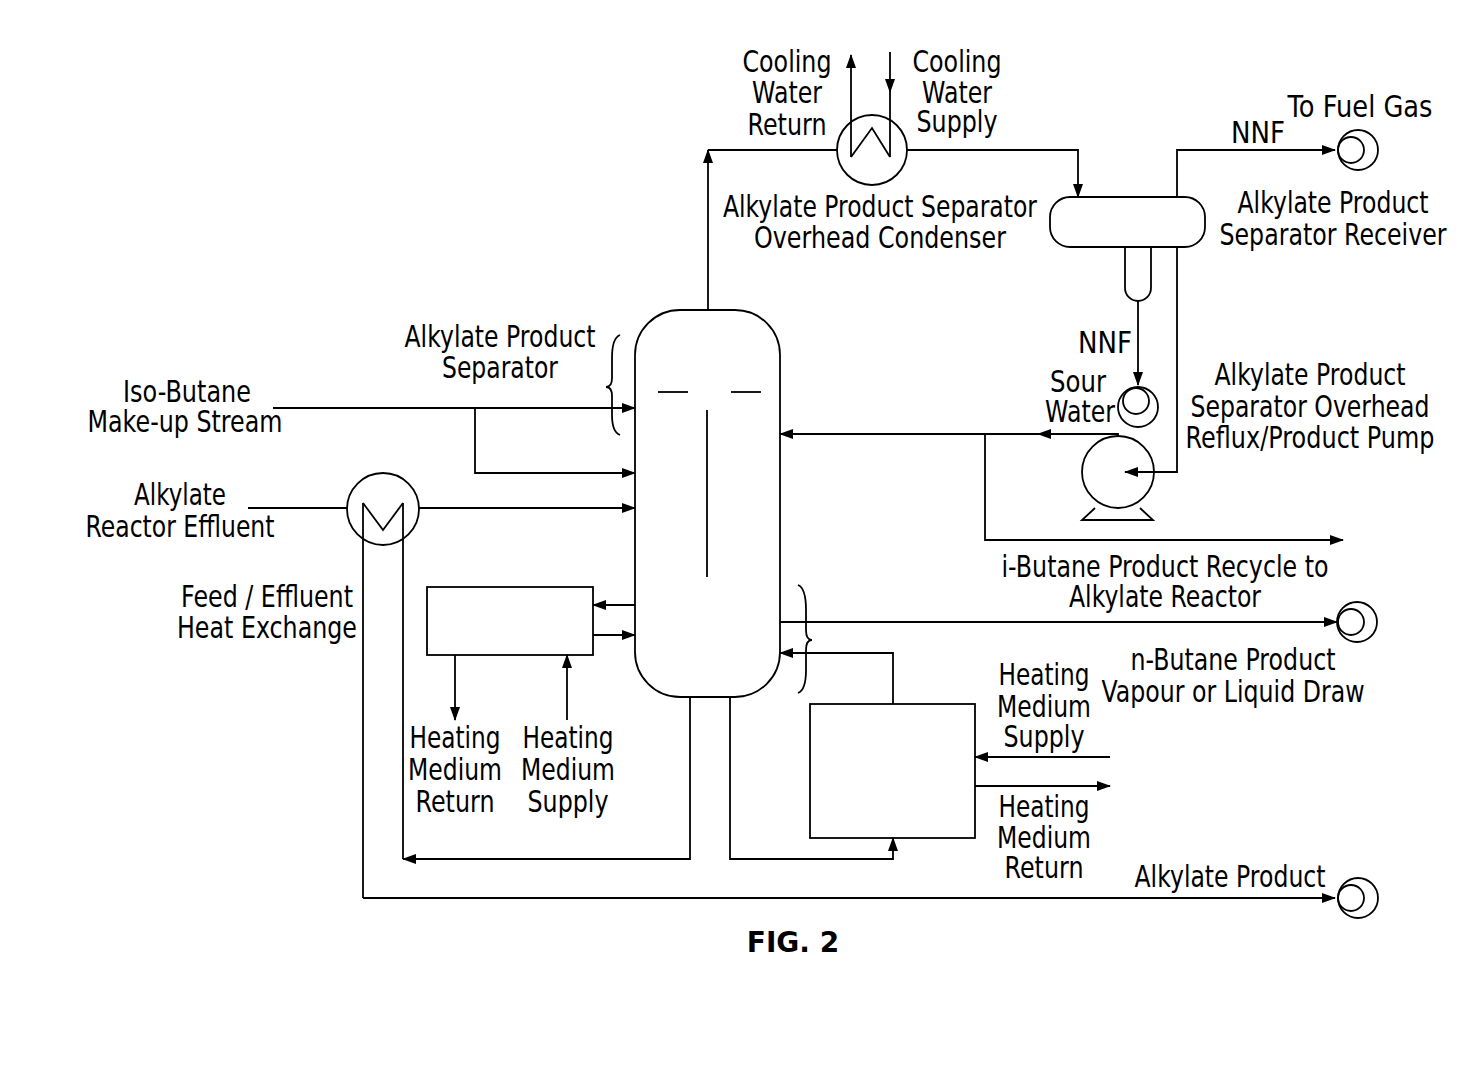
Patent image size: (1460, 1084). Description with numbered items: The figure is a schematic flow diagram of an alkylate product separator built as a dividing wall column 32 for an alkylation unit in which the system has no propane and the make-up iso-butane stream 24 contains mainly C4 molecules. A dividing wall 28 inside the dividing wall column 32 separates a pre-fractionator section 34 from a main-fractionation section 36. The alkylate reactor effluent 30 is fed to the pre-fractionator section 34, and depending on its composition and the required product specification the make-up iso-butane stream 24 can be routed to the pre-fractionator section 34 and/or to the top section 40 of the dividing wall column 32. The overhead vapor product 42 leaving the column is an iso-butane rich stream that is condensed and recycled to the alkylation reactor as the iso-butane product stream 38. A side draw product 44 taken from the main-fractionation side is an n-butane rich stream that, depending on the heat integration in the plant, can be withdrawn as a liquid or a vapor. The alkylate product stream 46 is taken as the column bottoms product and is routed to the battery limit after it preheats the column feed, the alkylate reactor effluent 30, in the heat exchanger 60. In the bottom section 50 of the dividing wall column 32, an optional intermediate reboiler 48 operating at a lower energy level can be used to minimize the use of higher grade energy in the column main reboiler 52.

The make-up iso-butane stream 24 is at (345, 408).
The dividing wall 28 is at (707, 576).
The alkylate reactor effluent 30 is at (303, 508).
The dividing wall column 32 is at (757, 318).
The pre-fractionator section 34 is at (671, 473).
The main-fractionation section 36 is at (745, 478).
The iso-butane product stream 38 is at (1213, 540).
The top section 40 is at (595, 385).
The overhead vapor product 42 is at (703, 212).
The side draw product 44 is at (948, 622).
The alkylate product stream 46 is at (585, 858).
The optional intermediate reboiler 48 is at (575, 585).
The bottom section 50 is at (836, 644).
The column main reboiler 52 is at (925, 703).
The heat exchanger 60 is at (360, 482).